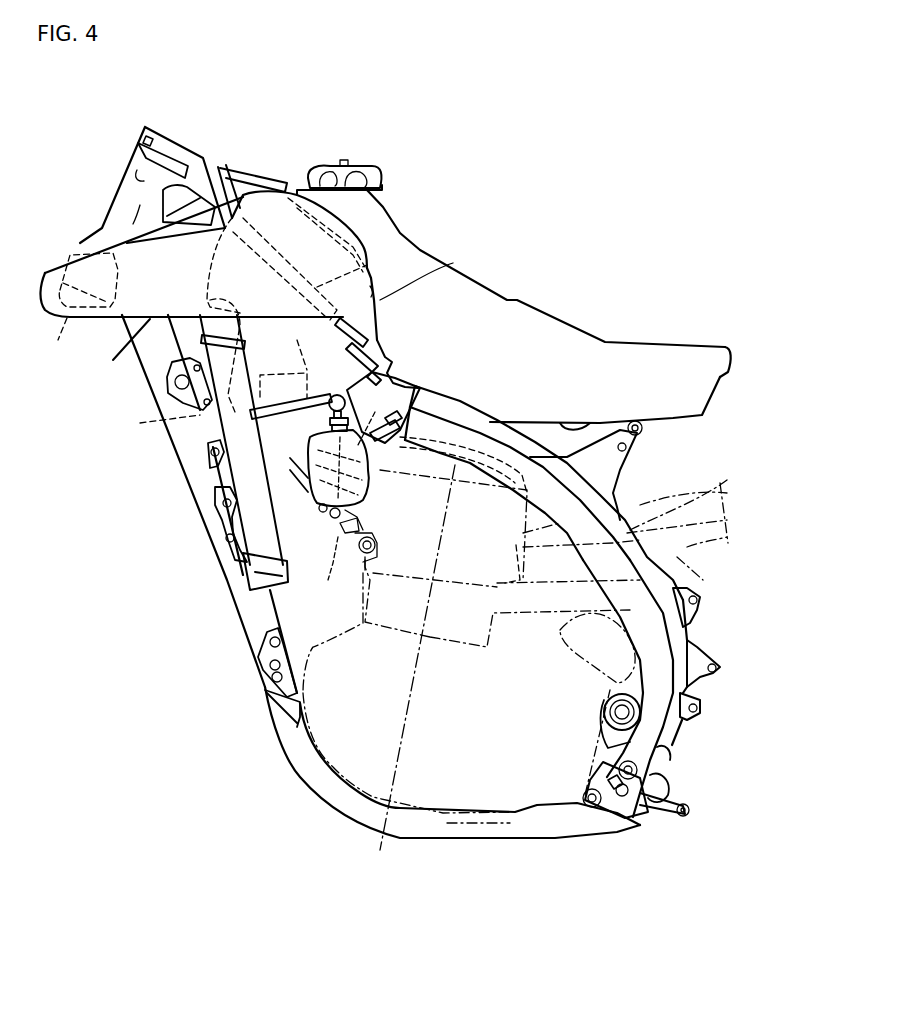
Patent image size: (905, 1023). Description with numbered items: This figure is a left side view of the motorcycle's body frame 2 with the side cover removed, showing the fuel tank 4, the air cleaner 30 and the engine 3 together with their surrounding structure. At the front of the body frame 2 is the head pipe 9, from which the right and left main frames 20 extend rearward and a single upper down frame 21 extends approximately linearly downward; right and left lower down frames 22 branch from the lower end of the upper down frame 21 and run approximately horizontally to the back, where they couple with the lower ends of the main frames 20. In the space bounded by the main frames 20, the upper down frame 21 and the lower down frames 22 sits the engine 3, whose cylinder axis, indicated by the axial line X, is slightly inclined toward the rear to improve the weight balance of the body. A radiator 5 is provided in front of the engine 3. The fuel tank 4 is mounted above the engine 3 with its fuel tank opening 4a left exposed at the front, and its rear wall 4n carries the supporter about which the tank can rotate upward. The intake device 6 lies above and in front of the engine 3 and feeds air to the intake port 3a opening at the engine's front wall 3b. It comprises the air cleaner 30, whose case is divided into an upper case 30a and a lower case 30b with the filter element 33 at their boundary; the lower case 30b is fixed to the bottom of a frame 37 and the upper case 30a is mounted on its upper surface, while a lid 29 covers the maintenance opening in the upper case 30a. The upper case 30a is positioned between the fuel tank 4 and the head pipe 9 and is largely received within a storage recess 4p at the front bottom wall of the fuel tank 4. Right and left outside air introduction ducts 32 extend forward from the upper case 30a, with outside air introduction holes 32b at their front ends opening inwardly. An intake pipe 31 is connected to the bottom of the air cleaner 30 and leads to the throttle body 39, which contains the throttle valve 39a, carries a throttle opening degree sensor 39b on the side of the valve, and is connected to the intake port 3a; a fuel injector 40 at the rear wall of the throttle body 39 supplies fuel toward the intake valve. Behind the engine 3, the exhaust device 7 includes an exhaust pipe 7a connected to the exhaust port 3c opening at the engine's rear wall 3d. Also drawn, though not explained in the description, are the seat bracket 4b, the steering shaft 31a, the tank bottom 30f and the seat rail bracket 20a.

The head pipe 9 is at (120, 178).
The fuel tank upper portion 30a is at (259, 162).
The tank stay 29 is at (268, 175).
The fuel filler cap 4a is at (365, 162).
The fuel tank 30 is at (352, 215).
The fuel pump 33 is at (403, 252).
The seat front edge 4p is at (453, 263).
The seat 4 is at (527, 298).
The seat rear end 4n is at (720, 377).
The seat bracket 4b is at (580, 425).
The steering shaft 31a is at (292, 360).
The fastener 37 is at (380, 345).
The fuel tank lower portion 30b is at (374, 380).
The main frame 6 is at (398, 390).
The ball joint 40 is at (348, 395).
The head plate 39a is at (383, 408).
The bracket 39b is at (311, 443).
The pump unit 39 is at (310, 500).
The engine mount 3b is at (340, 527).
The engine hanger 3a is at (348, 548).
The tank bottom 30f is at (150, 425).
The steering stem 31 is at (268, 428).
The down tube 21 is at (192, 460).
The front frame 5 is at (213, 490).
The engine 3 is at (363, 590).
The cylinder head 3d is at (560, 523).
The cylinder 3c is at (528, 580).
The rear fender 7 is at (715, 463).
The fender edge 7a is at (705, 578).
The vehicle body frame 2 is at (630, 505).
The seat rail bracket 20a is at (625, 478).
The rear frame 20 is at (653, 738).
The cylinder axis X is at (418, 728).
The lower frame 22 is at (413, 840).
The side cover 32b is at (63, 318).
The tank bracket 32 is at (113, 360).